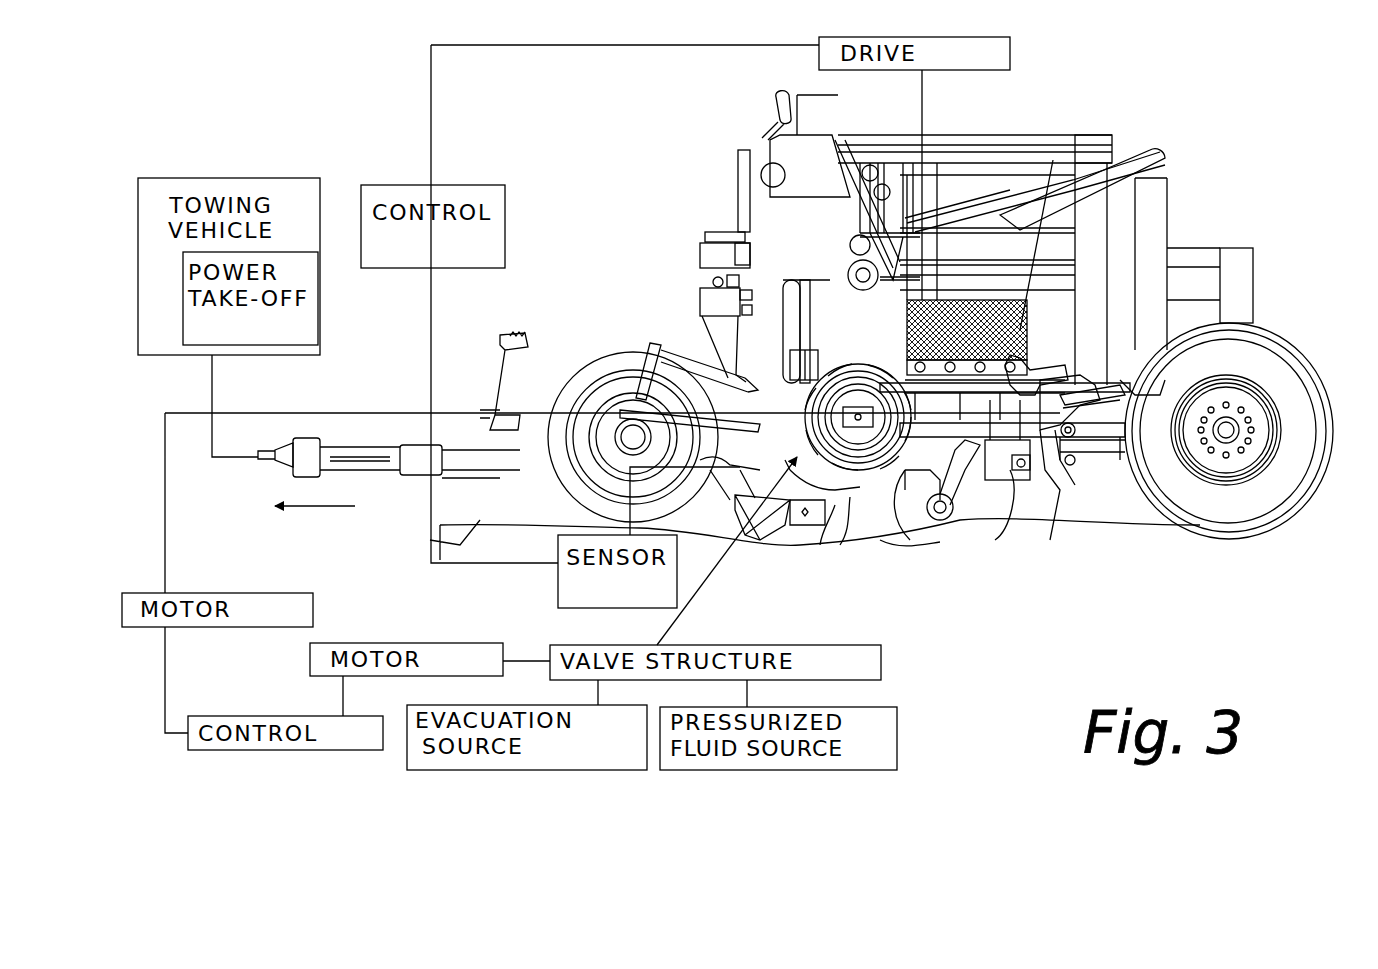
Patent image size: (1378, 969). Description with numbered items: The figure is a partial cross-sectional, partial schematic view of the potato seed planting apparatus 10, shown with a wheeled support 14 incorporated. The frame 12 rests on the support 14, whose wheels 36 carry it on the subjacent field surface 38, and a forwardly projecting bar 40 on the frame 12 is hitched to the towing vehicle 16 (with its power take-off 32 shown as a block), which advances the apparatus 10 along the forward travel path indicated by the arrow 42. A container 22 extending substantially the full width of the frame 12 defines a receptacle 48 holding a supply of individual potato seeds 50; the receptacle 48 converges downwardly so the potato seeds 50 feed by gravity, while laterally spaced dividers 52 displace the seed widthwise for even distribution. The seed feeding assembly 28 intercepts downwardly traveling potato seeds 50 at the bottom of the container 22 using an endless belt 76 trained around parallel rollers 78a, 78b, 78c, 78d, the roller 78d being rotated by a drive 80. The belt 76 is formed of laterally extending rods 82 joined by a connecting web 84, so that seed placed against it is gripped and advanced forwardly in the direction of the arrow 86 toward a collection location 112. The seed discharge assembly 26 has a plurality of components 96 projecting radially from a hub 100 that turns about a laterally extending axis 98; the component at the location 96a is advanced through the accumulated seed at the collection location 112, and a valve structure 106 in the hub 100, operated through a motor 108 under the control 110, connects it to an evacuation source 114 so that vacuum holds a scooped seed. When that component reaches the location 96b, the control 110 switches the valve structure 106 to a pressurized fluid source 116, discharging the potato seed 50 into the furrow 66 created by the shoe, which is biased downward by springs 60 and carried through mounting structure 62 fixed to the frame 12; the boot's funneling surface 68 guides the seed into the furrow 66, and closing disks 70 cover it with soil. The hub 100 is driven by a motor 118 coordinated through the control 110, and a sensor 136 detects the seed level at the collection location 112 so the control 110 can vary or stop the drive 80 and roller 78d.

The seed planting apparatus 10 is at (1230, 188).
The frame 12 is at (1270, 298).
The support 14 is at (1120, 495).
The towing vehicle 16 is at (147, 288).
The container 22 is at (1104, 126).
The seed discharge assembly 26 is at (752, 462).
The seed feeding assembly 28 is at (1100, 450).
The power take-off 32 is at (226, 340).
The wheels 36 is at (597, 467).
The field surface 38 is at (480, 492).
The forwardly projecting bar 40 is at (357, 445).
The arrow 42 is at (333, 508).
The receptacle 48 is at (977, 203).
The potato seeds 50 is at (947, 187).
The dividers 52 is at (965, 285).
The springs 60 is at (1068, 382).
The mounting structure 62 is at (1173, 520).
The furrow 66 is at (822, 525).
The funneling surface 68 is at (827, 513).
The closing disks 70 is at (1008, 525).
The endless belt 76 is at (1038, 500).
The roller 78a is at (1002, 392).
The roller 78b is at (1178, 160).
The roller 78c is at (1162, 148).
The roller 78d is at (848, 270).
The drive 80 is at (956, 65).
The rods 82 is at (947, 497).
The connecting web 84 is at (990, 500).
The arrow 86 is at (982, 268).
The components 96 is at (880, 495).
The component 96a is at (887, 548).
The component 96b is at (700, 325).
The axis 98 is at (790, 280).
The hub 100 is at (707, 260).
The valve structure 106 is at (837, 673).
The motor 108 is at (449, 671).
The control 110 is at (416, 253).
The collection location 112 is at (905, 545).
The evacuation source 114 is at (599, 750).
The pressurized fluid source 116 is at (850, 750).
The motor 118 is at (259, 621).
The sensor 136 is at (601, 597).